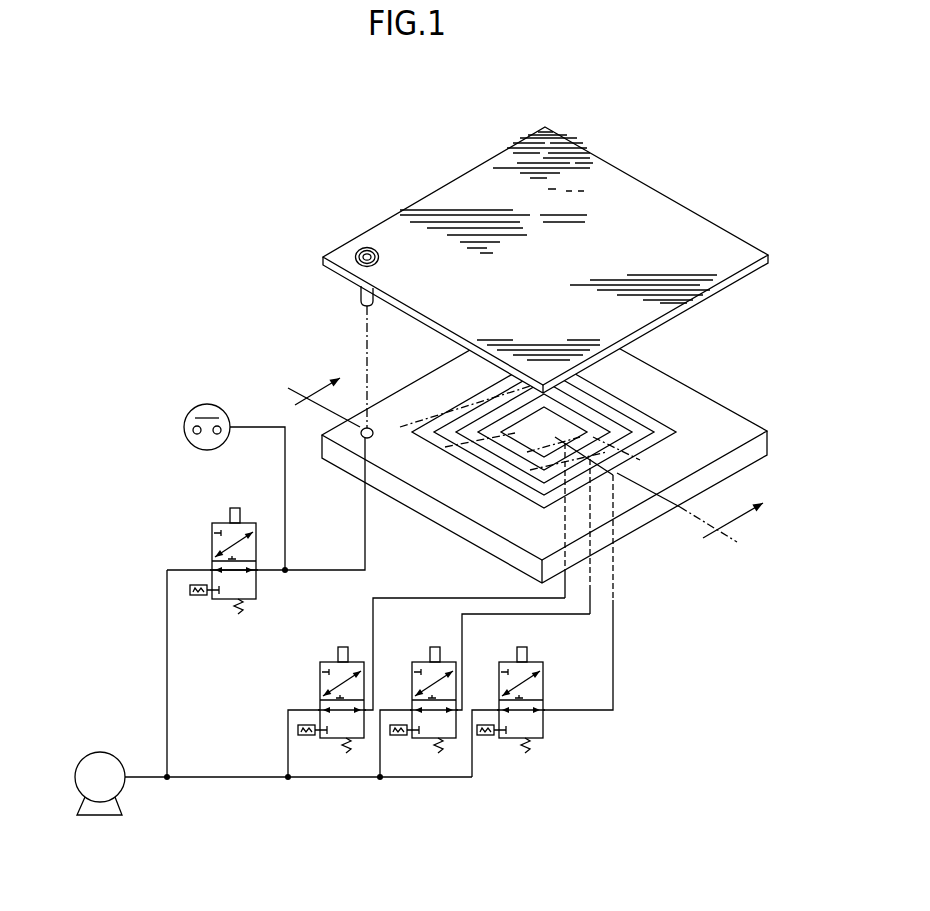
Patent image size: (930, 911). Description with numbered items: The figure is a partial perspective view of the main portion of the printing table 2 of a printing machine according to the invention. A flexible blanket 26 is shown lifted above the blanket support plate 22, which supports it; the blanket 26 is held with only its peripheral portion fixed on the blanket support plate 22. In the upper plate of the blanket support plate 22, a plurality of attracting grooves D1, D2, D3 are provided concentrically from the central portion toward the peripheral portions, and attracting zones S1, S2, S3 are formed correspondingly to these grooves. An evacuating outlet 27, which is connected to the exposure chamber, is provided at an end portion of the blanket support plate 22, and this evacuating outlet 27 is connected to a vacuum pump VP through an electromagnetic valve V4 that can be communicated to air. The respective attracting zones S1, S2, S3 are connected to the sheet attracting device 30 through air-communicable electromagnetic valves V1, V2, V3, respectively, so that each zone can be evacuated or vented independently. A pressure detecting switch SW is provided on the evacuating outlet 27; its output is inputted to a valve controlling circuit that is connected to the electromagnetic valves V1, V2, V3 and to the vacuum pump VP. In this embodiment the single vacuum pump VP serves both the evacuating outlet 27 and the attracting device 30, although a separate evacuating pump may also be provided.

The printing table 2 is at (708, 181).
The flexible blanket 26 is at (614, 168).
The evacuating outlet 27 is at (357, 247).
The blanket support plate 22 is at (665, 374).
The attracting groove D1 is at (527, 422).
The attracting groove D2 is at (582, 417).
The attracting groove D3 is at (599, 387).
The attracting zone S1 is at (453, 440).
The attracting zone S2 is at (512, 466).
The attracting zone S3 is at (528, 480).
The pressure detecting switch SW is at (207, 404).
The electromagnetic valve V1 is at (332, 661).
The electromagnetic valve V2 is at (428, 661).
The electromagnetic valve V3 is at (510, 661).
The electromagnetic valve V4 is at (218, 522).
The sheet attracting device 30 is at (100, 746).
The vacuum pump VP is at (100, 752).